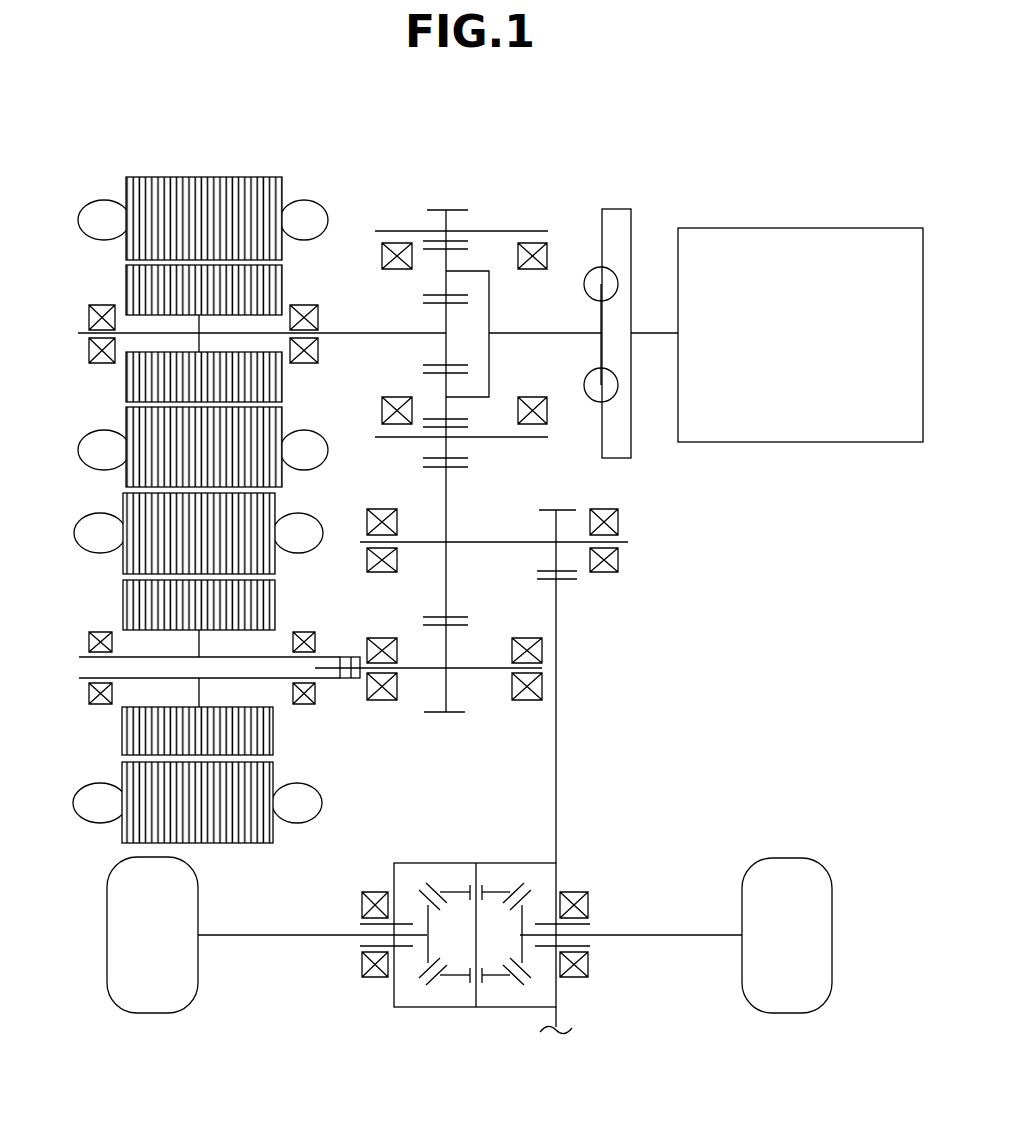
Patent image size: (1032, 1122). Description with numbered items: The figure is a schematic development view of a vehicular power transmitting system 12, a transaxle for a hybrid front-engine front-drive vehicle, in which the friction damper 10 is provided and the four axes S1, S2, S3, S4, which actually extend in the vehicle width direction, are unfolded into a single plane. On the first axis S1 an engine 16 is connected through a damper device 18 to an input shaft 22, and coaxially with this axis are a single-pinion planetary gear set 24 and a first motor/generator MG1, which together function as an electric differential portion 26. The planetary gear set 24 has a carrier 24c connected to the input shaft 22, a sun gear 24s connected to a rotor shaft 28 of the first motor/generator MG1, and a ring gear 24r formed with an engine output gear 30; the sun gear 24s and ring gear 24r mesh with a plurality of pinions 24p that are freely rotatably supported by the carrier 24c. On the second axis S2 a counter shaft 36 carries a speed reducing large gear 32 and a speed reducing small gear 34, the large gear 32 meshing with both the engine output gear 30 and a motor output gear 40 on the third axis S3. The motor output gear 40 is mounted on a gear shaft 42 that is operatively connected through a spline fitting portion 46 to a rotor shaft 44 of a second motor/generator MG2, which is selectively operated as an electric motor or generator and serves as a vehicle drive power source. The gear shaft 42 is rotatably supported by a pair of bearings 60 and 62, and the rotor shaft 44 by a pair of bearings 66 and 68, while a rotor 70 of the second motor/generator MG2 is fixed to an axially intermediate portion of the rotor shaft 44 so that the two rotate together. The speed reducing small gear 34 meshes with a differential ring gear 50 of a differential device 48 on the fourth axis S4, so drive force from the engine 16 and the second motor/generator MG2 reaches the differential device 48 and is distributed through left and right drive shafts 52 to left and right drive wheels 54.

The friction damper 10 is at (352, 683).
The vehicular power transmitting system 12 is at (622, 128).
The engine 16 is at (838, 236).
The damper device 18 is at (635, 227).
The input shaft 22 is at (531, 336).
The planetary gear set 24 is at (448, 427).
The ring gear 24r is at (465, 247).
The carrier 24c is at (490, 306).
The sun gear 24s is at (431, 369).
The pinions 24p is at (466, 423).
The electric differential portion 26 is at (484, 133).
The rotor shaft 28 is at (381, 332).
The engine output gear 30 is at (441, 206).
The speed reducing large gear 32 is at (470, 620).
The speed reducing small gear 34 is at (553, 508).
The counter shaft 36 is at (475, 540).
The motor output gear 40 is at (440, 718).
The gear shaft 42 is at (486, 672).
The rotor shaft 44 is at (272, 680).
The spline fitting portion 46 is at (330, 652).
The differential device 48 is at (394, 1033).
The differential ring gear 50 is at (573, 578).
The drive shafts 52 is at (280, 937).
The drive wheels 54 is at (151, 996).
The bearing 60 is at (383, 637).
The bearing 62 is at (527, 637).
The bearing 66 is at (88, 690).
The bearing 68 is at (302, 632).
The rotor 70 is at (122, 732).
The first motor/generator MG1 is at (152, 172).
The second motor/generator MG2 is at (171, 668).
The first axis S1 is at (247, 334).
The second axis S2 is at (508, 540).
The third axis S3 is at (187, 696).
The fourth axis S4 is at (847, 937).